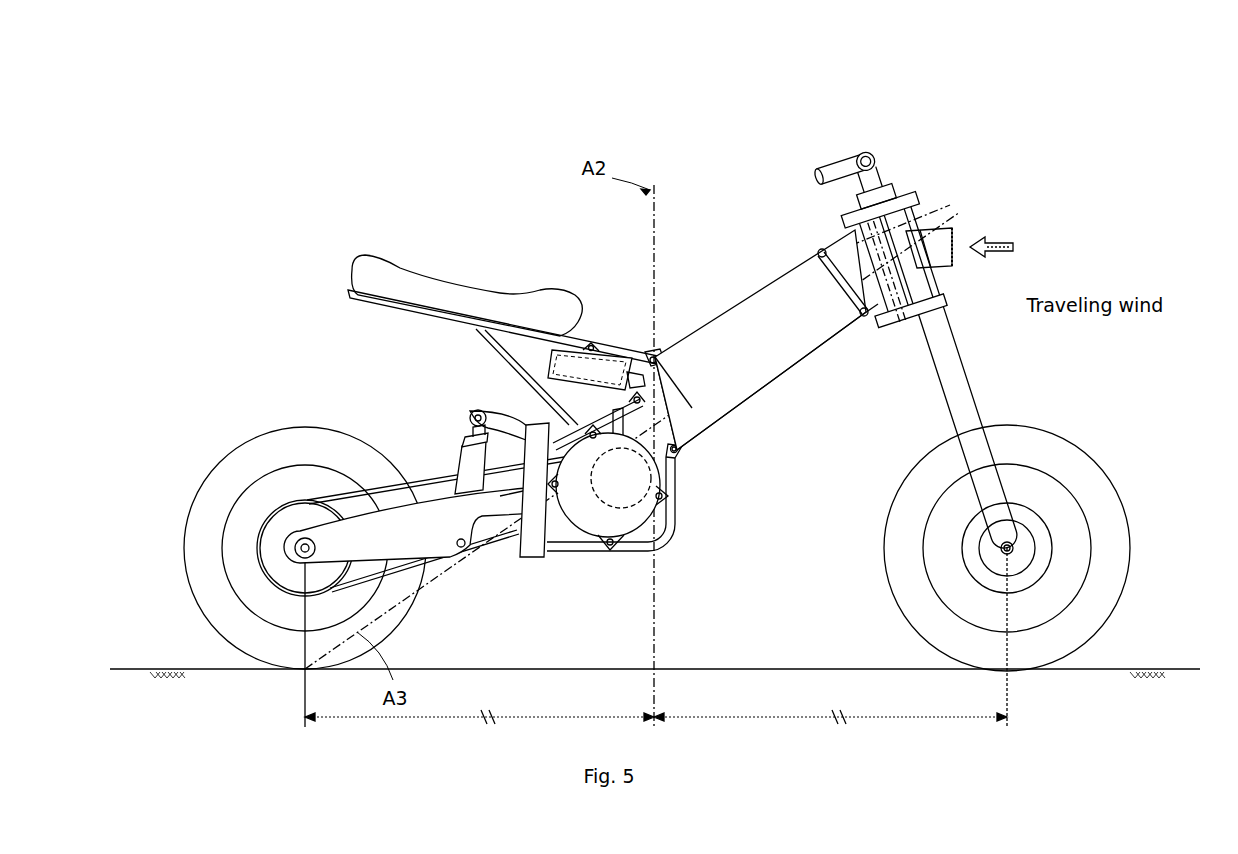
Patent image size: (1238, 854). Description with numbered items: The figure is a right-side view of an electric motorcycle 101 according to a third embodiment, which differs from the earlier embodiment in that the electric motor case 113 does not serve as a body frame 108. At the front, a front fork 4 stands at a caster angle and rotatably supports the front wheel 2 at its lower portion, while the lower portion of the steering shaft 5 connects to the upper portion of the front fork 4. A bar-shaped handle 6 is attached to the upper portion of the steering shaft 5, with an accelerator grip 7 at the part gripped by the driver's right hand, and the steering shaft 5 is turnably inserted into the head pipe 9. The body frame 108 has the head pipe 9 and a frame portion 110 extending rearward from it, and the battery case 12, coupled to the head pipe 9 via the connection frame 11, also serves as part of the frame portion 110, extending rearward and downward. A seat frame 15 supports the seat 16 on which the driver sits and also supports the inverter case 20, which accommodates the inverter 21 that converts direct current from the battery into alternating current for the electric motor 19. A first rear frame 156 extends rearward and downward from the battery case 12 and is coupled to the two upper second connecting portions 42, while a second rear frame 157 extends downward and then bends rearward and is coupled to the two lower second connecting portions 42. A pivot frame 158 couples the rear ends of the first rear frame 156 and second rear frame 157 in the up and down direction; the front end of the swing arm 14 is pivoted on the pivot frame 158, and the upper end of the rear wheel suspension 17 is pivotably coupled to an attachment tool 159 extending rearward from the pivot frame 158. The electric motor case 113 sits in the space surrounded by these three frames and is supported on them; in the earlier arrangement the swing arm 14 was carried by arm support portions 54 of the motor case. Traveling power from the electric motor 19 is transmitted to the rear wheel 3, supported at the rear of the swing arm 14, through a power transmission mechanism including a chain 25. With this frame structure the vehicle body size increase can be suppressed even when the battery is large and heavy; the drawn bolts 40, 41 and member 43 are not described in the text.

The front wheel 2 is at (1082, 448).
The rear wheel 3 is at (226, 458).
The front fork 4 is at (958, 394).
The steering shaft 5 is at (923, 213).
The handle 6 is at (885, 178).
The accelerator grip 7 is at (830, 165).
The head pipe 9 is at (885, 316).
The connection frame 11 is at (828, 236).
The battery case 12 is at (758, 291).
The swing arm 14 is at (438, 565).
The seat frame 15 is at (346, 294).
The seat 16 is at (421, 262).
The rear wheel suspension 17 is at (457, 452).
The electric motor 19 is at (621, 460).
The inverter case 20 is at (586, 351).
The inverter 21 is at (551, 349).
The chain 25 is at (343, 486).
The air intake 40 is at (957, 237).
The fastening bolts 41 is at (820, 251).
The second connecting portions 42 is at (622, 350).
The frame member 43 is at (665, 350).
The arm support portions 54 is at (503, 504).
The electric motorcycle 101 is at (313, 176).
The body frame 108 is at (881, 430).
The frame portion 110 is at (790, 400).
The electric motor case 113 is at (588, 551).
The first rear frame 156 is at (560, 411).
The second rear frame 157 is at (668, 534).
The pivot frame 158 is at (538, 560).
The attachment tool 159 is at (490, 412).